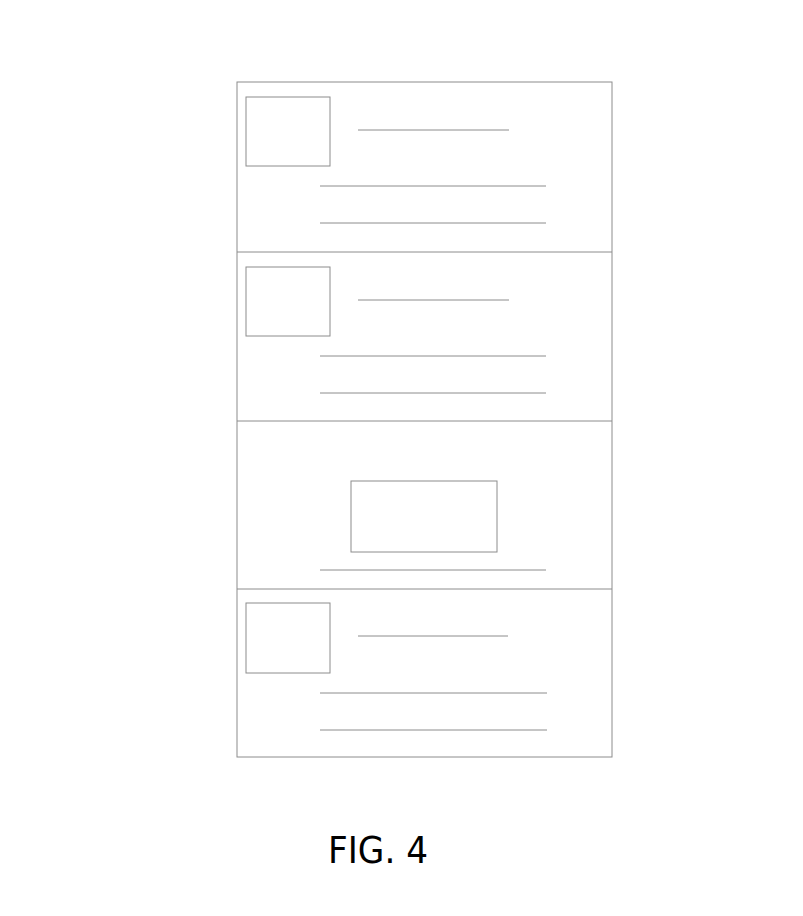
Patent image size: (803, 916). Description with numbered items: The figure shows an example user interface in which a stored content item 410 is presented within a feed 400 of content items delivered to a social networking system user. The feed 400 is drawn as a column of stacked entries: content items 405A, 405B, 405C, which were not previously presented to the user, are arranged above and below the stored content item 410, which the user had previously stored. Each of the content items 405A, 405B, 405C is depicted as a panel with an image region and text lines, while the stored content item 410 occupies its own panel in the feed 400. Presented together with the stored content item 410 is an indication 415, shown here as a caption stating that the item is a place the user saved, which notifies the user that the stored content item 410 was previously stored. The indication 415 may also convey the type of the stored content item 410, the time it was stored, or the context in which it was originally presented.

The feed 400 is at (422, 82).
The content item 405A is at (237, 168).
The content item 405B is at (237, 337).
The content item 405C is at (237, 675).
The stored content item 410 is at (237, 505).
The indication 415 is at (287, 438).